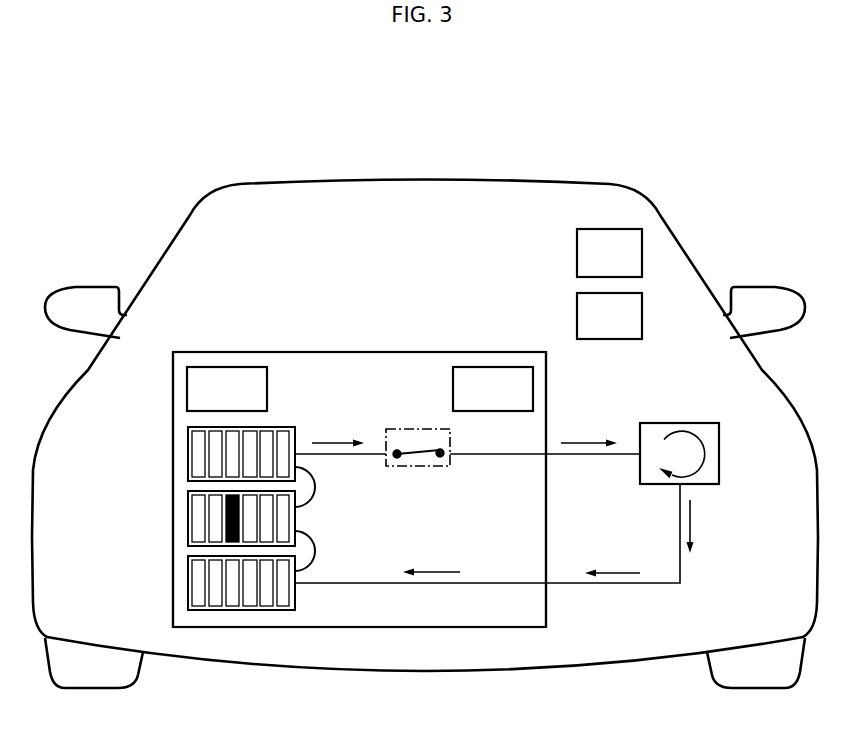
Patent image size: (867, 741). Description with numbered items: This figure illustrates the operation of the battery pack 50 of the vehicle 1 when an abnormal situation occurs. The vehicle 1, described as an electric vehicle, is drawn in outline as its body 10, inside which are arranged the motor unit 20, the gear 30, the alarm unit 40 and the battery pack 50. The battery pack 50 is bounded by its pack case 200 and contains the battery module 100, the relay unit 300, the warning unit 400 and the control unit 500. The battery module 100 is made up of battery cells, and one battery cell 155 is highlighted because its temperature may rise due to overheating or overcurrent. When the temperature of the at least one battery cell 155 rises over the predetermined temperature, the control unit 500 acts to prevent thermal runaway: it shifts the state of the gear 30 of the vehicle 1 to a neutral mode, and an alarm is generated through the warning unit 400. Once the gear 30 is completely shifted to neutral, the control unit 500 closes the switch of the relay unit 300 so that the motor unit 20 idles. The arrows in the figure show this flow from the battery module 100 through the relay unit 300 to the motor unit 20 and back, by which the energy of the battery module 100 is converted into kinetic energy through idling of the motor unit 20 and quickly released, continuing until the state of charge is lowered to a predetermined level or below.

The vehicle 1 is at (195, 140).
The body 10 is at (544, 183).
The motor unit 20 is at (691, 423).
The gear 30 is at (577, 312).
The alarm unit 40 is at (577, 252).
The battery pack 50 is at (388, 336).
The battery module 100 is at (176, 509).
The battery cell 155 is at (226, 527).
The pack case 200 is at (337, 352).
The relay unit 300 is at (417, 429).
The warning unit 400 is at (493, 367).
The control unit 500 is at (228, 367).